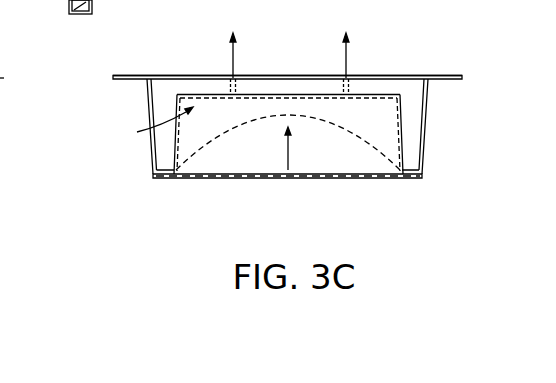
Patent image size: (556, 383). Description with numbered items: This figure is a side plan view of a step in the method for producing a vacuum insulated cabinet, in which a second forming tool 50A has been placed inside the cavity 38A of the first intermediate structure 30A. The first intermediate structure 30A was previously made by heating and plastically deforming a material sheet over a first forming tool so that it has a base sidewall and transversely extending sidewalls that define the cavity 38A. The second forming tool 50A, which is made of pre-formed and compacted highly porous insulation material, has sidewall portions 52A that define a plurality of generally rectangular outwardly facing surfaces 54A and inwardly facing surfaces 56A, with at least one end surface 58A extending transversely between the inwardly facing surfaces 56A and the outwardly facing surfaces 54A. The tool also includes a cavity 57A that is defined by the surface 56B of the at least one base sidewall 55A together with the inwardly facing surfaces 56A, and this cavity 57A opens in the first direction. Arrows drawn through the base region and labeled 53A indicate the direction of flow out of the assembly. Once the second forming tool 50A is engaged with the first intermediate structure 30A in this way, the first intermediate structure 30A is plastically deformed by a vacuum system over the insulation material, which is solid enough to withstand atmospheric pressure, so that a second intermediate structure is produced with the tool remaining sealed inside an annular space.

The second forming tool 50A is at (405, 88).
The sidewall portions 52A is at (163, 152).
The outwardly facing surfaces 54A is at (148, 103).
The base sidewall 55A is at (370, 88).
The vent opening 53A is at (343, 87).
The inwardly facing surfaces 56A is at (177, 137).
The surface of base sidewall 56B is at (300, 95).
The cavity 57A is at (138, 127).
The end surface 58A is at (162, 170).
The first intermediate structure 30A is at (410, 178).
The cavity 38A is at (240, 157).